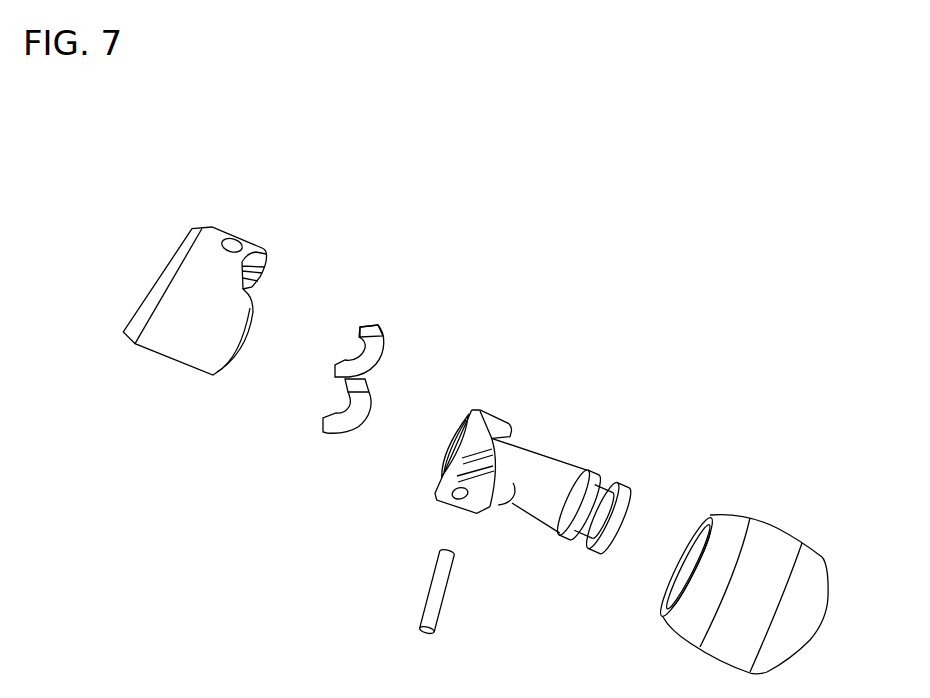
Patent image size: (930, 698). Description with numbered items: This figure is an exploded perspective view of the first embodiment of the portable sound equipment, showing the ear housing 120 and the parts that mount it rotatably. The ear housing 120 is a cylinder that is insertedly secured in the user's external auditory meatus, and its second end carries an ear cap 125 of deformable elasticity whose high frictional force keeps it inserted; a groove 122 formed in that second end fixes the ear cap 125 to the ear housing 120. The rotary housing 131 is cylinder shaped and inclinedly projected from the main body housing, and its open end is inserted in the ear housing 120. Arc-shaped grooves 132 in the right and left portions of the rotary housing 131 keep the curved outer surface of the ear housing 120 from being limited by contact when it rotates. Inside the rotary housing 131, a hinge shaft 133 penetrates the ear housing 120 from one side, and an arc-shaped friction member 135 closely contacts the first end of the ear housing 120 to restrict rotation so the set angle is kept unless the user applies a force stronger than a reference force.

The ear housing 120 is at (540, 518).
The groove 122 is at (603, 483).
The ear cap 125 is at (772, 538).
The rotary housing 131 is at (175, 347).
The groove 132 is at (258, 273).
The hinge shaft 133 is at (437, 592).
The friction member 135 is at (349, 427).